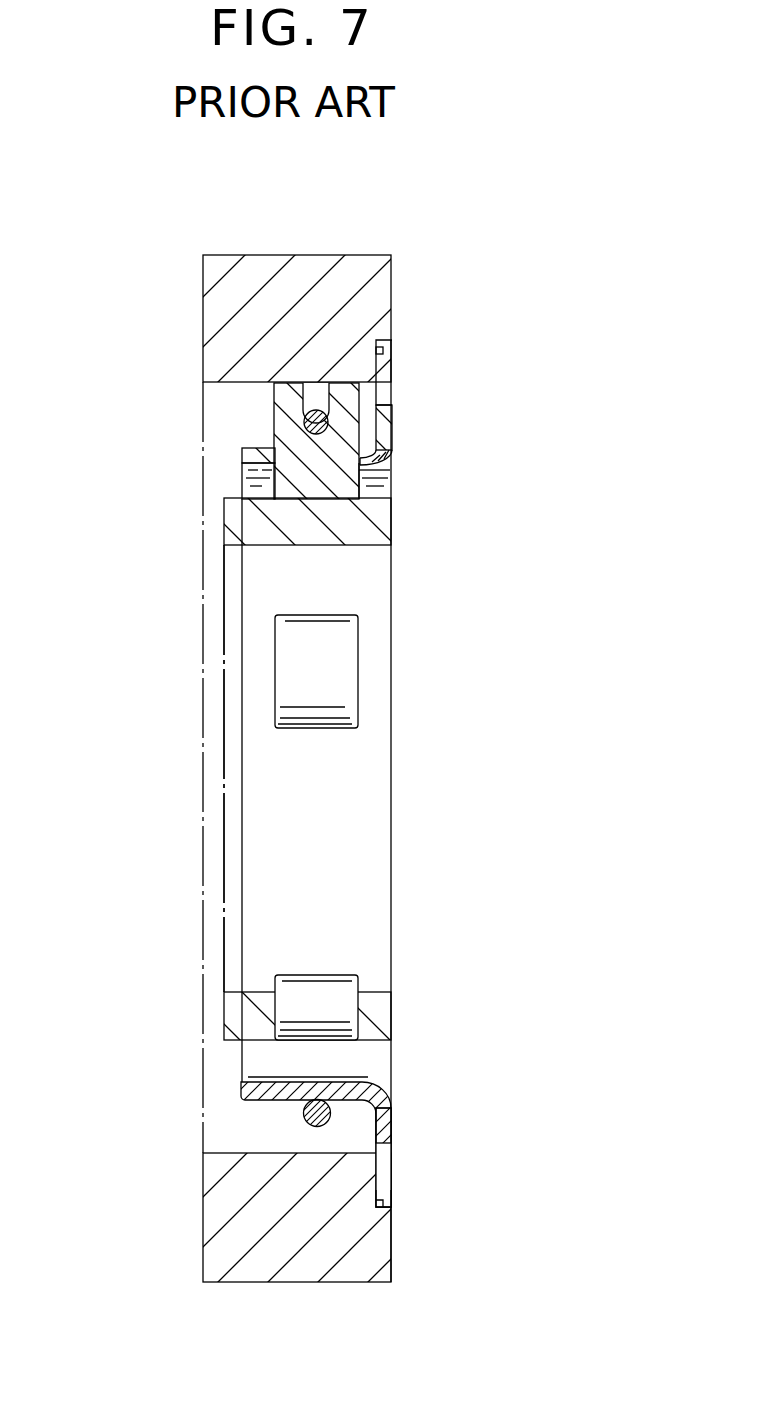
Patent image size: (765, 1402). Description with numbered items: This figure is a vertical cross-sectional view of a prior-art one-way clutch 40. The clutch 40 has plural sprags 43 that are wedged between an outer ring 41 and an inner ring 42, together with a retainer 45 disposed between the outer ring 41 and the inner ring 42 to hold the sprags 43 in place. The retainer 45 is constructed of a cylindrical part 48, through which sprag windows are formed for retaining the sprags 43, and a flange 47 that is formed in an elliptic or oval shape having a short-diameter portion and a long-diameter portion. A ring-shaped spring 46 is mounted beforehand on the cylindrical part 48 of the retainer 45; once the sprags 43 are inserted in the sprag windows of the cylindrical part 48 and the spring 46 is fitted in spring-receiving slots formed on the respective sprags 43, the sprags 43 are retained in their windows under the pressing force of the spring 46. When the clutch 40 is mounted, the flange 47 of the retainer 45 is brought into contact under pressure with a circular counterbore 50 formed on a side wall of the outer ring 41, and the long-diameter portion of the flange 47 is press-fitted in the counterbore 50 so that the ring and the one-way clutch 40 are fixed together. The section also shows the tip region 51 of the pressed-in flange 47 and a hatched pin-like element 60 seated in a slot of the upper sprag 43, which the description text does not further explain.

The one-way clutch 40 is at (412, 587).
The outer ring 41 is at (203, 296).
The inner ring 42 is at (223, 643).
The sprags 43 is at (274, 412).
The retainer 45 is at (402, 448).
The ring-shaped spring 46 is at (303, 1118).
The flange 47 is at (392, 415).
The cylindrical part 48 is at (242, 475).
The circular counterbore 50 is at (392, 1158).
The plate tip 51 is at (392, 1193).
The pin 60 is at (320, 408).